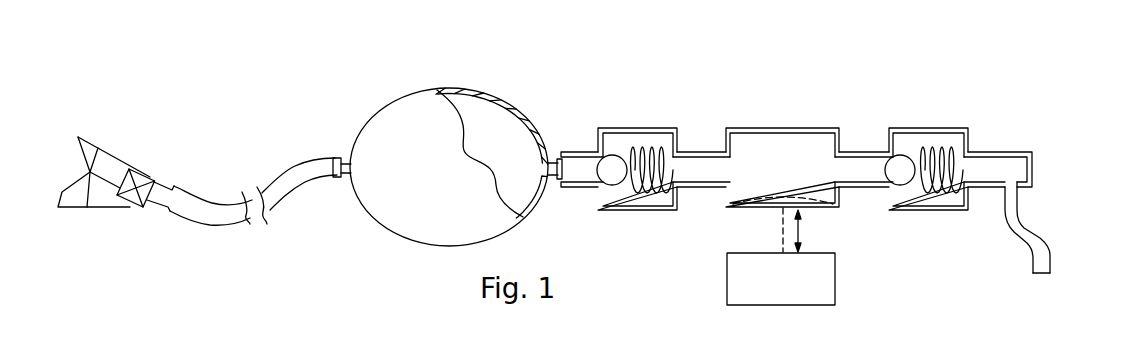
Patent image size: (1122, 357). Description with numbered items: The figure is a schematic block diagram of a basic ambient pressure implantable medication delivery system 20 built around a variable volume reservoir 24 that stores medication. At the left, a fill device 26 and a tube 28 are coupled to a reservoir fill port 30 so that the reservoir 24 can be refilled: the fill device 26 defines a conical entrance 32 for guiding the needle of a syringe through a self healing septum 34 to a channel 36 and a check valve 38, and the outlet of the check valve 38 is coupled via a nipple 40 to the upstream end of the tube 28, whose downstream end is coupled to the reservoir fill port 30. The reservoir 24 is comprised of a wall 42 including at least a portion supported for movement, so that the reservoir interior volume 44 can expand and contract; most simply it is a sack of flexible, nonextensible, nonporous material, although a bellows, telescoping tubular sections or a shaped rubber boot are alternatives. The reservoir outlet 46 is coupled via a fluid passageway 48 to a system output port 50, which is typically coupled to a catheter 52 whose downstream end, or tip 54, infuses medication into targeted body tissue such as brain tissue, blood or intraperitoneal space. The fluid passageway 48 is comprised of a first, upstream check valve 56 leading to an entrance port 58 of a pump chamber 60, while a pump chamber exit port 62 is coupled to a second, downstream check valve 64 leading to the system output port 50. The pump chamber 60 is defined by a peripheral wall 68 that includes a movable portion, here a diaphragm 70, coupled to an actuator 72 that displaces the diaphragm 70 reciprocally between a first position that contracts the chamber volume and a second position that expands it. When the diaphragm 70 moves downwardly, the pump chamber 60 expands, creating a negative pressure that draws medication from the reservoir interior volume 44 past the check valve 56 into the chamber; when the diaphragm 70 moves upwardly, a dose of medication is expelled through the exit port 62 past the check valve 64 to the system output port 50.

The implantable medication delivery system 20 is at (845, 82).
The variable volume reservoir 24 is at (492, 78).
The fill device 26 is at (163, 148).
The tube 28 is at (220, 226).
The reservoir fill port 30 is at (343, 178).
The conical entrance 32 is at (82, 163).
The self healing septum 34 is at (100, 152).
The channel 36 is at (108, 180).
The check valve 38 is at (128, 207).
The nipple 40 is at (163, 188).
The wall 42 is at (520, 113).
The reservoir interior volume 44 is at (527, 197).
The reservoir outlet 46 is at (550, 157).
The fluid passageway 48 is at (745, 105).
The system output port 50 is at (1018, 192).
The catheter 52 is at (1047, 238).
The tip 54 is at (1053, 273).
The first check valve 56 is at (636, 213).
The entrance port 58 is at (727, 168).
The pump chamber 60 is at (792, 147).
The pump chamber exit port 62 is at (840, 168).
The second check valve 64 is at (928, 212).
The peripheral wall 68 is at (805, 128).
The diaphragm 70 is at (772, 199).
The actuator 72 is at (835, 278).